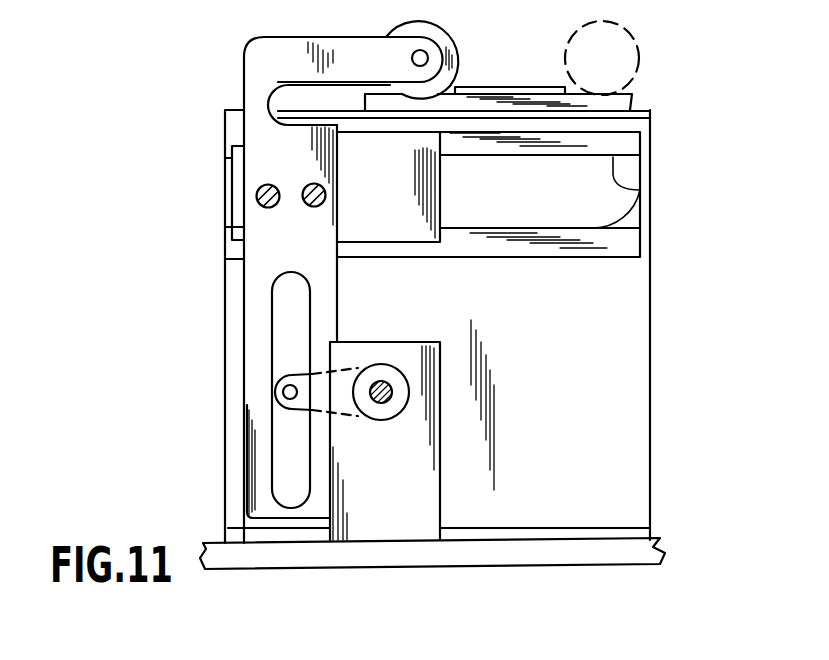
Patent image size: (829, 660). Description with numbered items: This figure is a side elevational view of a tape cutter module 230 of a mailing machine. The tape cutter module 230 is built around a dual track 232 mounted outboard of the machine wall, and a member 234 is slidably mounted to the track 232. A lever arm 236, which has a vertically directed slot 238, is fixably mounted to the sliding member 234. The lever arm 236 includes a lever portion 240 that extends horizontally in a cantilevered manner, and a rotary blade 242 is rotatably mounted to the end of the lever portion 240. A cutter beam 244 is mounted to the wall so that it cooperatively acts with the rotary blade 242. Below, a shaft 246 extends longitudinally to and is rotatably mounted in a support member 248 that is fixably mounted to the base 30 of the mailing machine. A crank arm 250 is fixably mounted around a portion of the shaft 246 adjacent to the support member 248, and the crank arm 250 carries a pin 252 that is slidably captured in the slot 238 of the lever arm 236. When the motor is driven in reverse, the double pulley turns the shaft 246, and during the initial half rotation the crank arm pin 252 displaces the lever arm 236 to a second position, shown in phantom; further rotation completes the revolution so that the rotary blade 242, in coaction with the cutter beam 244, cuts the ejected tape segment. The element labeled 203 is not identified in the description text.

The base 30 is at (663, 539).
The guide plate 203 is at (537, 87).
The tape cutter module 230 is at (176, 169).
The dual track 232 is at (640, 190).
The member 234 is at (440, 208).
The lever arm 236 is at (245, 277).
The slot 238 is at (282, 325).
The lever portion 240 is at (345, 36).
The rotary blade 242 is at (566, 45).
The cutter beam 244 is at (632, 94).
The shaft 246 is at (383, 385).
The support member 248 is at (437, 442).
The crank arm 250 is at (323, 413).
The pin 252 is at (283, 372).